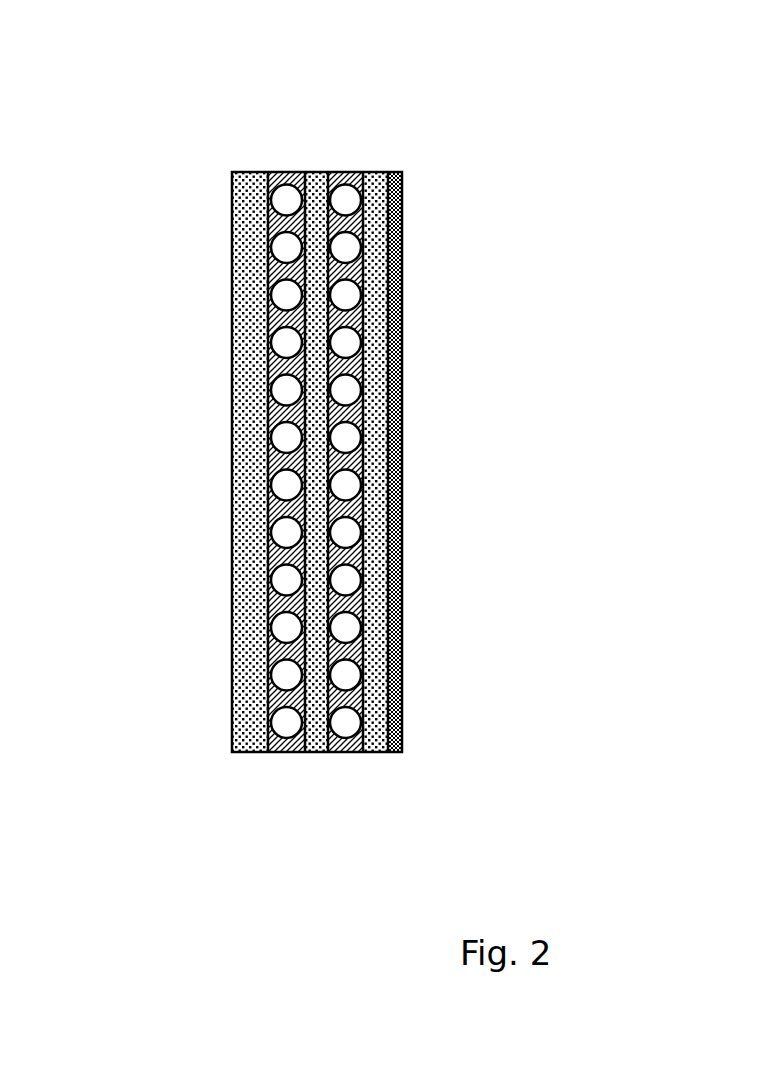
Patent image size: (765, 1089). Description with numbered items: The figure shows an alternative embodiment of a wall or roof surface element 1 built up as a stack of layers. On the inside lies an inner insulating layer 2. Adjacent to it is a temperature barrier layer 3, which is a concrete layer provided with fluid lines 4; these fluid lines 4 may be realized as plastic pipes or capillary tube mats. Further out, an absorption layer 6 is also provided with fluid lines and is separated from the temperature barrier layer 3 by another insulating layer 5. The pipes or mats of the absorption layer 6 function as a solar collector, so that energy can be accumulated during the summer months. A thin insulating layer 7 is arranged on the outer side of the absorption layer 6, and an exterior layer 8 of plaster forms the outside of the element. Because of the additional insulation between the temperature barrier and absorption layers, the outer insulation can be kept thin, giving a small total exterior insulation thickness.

The wall or roof surface element 1 is at (143, 832).
The inner insulating layer 2 is at (232, 190).
The temperature barrier layer 3 is at (288, 172).
The fluid lines 4 is at (295, 722).
The insulating layer 5 is at (312, 172).
The absorption layer 6 is at (337, 172).
The thin insulating layer 7 is at (362, 172).
The exterior layer 8 is at (401, 210).